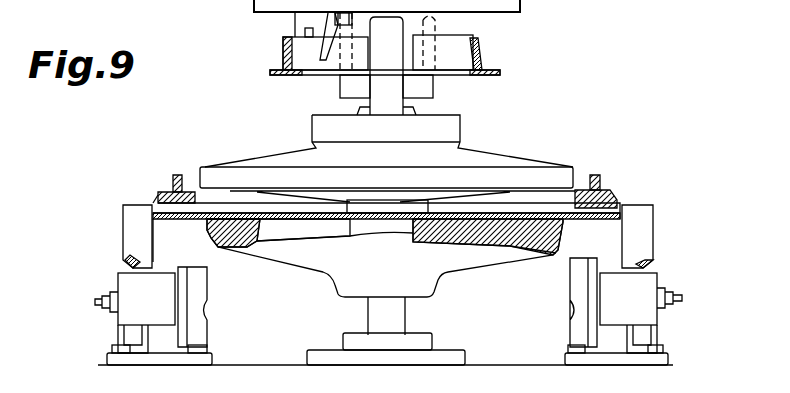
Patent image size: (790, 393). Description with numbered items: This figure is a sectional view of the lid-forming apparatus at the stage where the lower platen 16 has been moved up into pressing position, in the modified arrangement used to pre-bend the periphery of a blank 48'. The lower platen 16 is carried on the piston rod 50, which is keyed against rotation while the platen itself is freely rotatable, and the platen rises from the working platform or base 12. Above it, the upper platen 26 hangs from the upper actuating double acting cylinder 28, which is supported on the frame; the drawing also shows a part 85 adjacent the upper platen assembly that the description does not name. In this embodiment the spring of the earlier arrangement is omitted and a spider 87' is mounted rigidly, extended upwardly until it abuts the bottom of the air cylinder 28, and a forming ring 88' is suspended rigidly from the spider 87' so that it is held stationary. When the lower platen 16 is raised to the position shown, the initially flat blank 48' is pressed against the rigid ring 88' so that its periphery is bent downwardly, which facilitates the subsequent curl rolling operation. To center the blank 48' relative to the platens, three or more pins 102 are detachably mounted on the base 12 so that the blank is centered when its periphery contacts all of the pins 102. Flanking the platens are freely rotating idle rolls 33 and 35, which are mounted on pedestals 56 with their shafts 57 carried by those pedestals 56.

The actuating double acting cylinder 28 is at (505, 13).
The spider 87' is at (481, 43).
The shaft 85 is at (383, 100).
The upper platen 26 is at (240, 160).
The blank 48' is at (386, 171).
The forming ring 88' is at (620, 182).
The pins 102 is at (133, 230).
The lower platen 16 is at (358, 258).
The piston rod 50 is at (372, 315).
The working platform or base 12 is at (270, 365).
The shafts 57 is at (113, 288).
The pedestals 56 is at (127, 333).
The idle roll 35 is at (200, 318).
The idle roll 33 is at (572, 315).